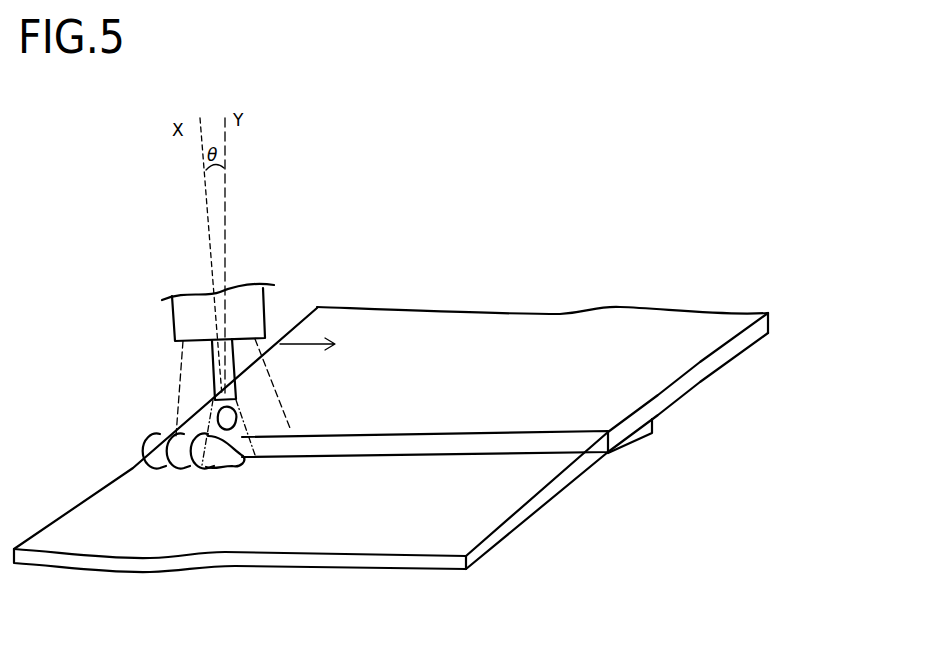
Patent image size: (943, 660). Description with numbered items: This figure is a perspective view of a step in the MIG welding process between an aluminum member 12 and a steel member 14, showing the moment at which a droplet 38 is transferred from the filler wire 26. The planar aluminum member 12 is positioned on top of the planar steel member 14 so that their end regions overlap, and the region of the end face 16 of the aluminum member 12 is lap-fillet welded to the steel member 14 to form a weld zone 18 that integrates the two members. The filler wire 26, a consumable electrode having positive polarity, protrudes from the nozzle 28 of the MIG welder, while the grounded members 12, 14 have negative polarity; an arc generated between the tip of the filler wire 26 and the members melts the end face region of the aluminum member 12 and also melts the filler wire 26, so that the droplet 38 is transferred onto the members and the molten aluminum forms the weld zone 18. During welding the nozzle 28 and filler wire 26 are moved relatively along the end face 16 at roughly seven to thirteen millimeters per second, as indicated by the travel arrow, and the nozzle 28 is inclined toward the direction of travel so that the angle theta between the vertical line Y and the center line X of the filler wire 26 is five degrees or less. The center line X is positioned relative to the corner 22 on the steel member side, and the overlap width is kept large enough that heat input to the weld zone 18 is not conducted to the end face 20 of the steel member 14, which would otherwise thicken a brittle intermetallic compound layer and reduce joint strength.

The aluminum member 12 is at (714, 386).
The steel member 14 is at (515, 544).
The end face 16 is at (586, 442).
The weld zone 18 is at (128, 450).
The end face 20 is at (654, 427).
The corner 22 is at (517, 454).
The filler wire 26 is at (214, 366).
The nozzle 28 is at (168, 313).
The droplet 38 is at (224, 422).